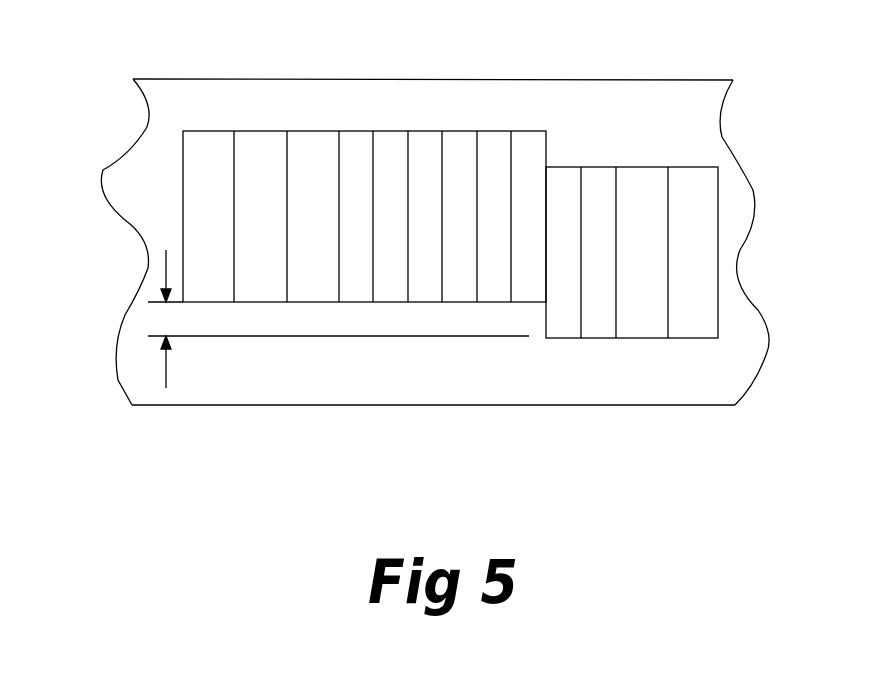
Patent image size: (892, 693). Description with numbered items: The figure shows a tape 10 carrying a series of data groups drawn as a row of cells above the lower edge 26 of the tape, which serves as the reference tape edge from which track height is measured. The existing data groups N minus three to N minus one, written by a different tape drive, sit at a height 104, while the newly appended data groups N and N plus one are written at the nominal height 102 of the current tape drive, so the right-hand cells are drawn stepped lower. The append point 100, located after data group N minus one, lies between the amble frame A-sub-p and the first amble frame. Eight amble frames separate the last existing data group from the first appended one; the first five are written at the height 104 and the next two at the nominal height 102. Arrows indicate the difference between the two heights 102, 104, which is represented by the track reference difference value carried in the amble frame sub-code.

The tape 10 is at (427, 387).
The lower edge of the tape 26 is at (668, 407).
The append point 100 is at (373, 131).
The nominal height 102 is at (513, 339).
The height 104 is at (148, 302).